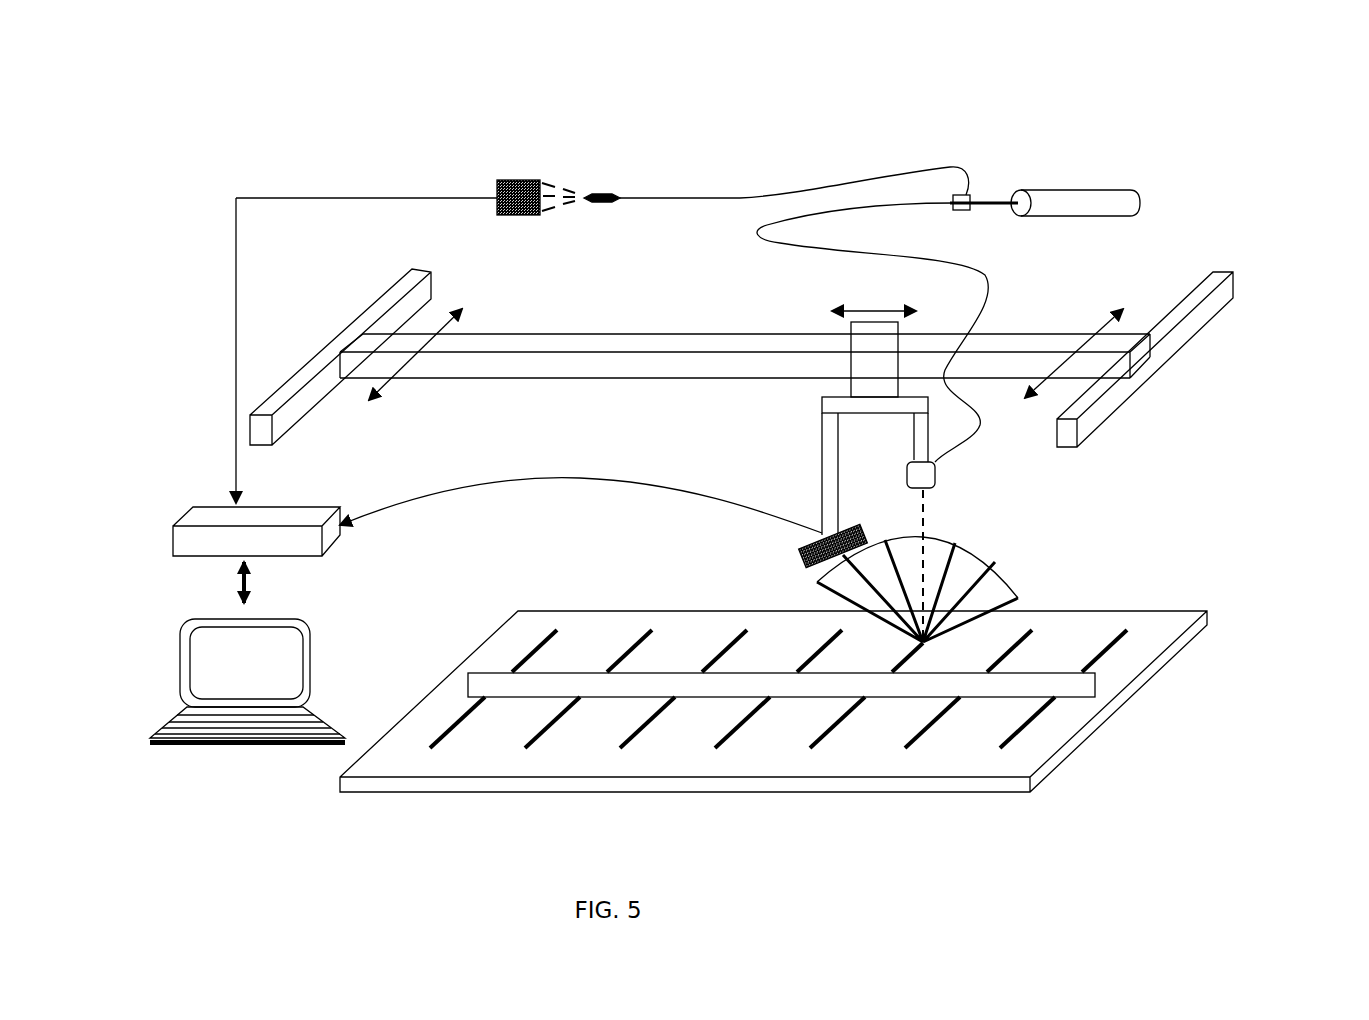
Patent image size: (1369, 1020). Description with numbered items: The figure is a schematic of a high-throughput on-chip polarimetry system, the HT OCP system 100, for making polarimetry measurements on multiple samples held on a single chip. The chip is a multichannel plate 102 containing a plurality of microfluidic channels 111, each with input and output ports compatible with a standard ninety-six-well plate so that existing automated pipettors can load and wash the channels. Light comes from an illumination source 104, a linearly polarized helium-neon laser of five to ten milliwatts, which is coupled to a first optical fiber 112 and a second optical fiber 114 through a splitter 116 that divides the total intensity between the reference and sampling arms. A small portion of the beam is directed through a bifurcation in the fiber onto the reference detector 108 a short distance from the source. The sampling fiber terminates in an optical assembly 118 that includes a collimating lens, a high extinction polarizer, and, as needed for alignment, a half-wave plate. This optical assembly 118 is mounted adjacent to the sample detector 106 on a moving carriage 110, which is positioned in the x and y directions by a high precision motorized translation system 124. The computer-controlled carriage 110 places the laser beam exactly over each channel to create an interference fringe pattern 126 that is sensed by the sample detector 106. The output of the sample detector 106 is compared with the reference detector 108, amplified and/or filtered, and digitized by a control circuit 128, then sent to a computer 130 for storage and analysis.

The HT OCP system 100 is at (1072, 96).
The multichannel plate 102 is at (962, 760).
The illumination source 104 is at (1110, 196).
The sample detector 106 is at (866, 528).
The reference detector 108 is at (527, 180).
The moving carriage 110 is at (880, 397).
The microfluidic channels 111 is at (740, 723).
The first optical fiber 112 is at (663, 208).
The second optical fiber 114 is at (752, 235).
The splitter 116 is at (968, 192).
The optical assembly 118 is at (935, 472).
The motorized translation system 124 is at (1220, 361).
The interference fringe pattern 126 is at (1022, 572).
The control circuit 128 is at (205, 525).
The computer 130 is at (230, 686).